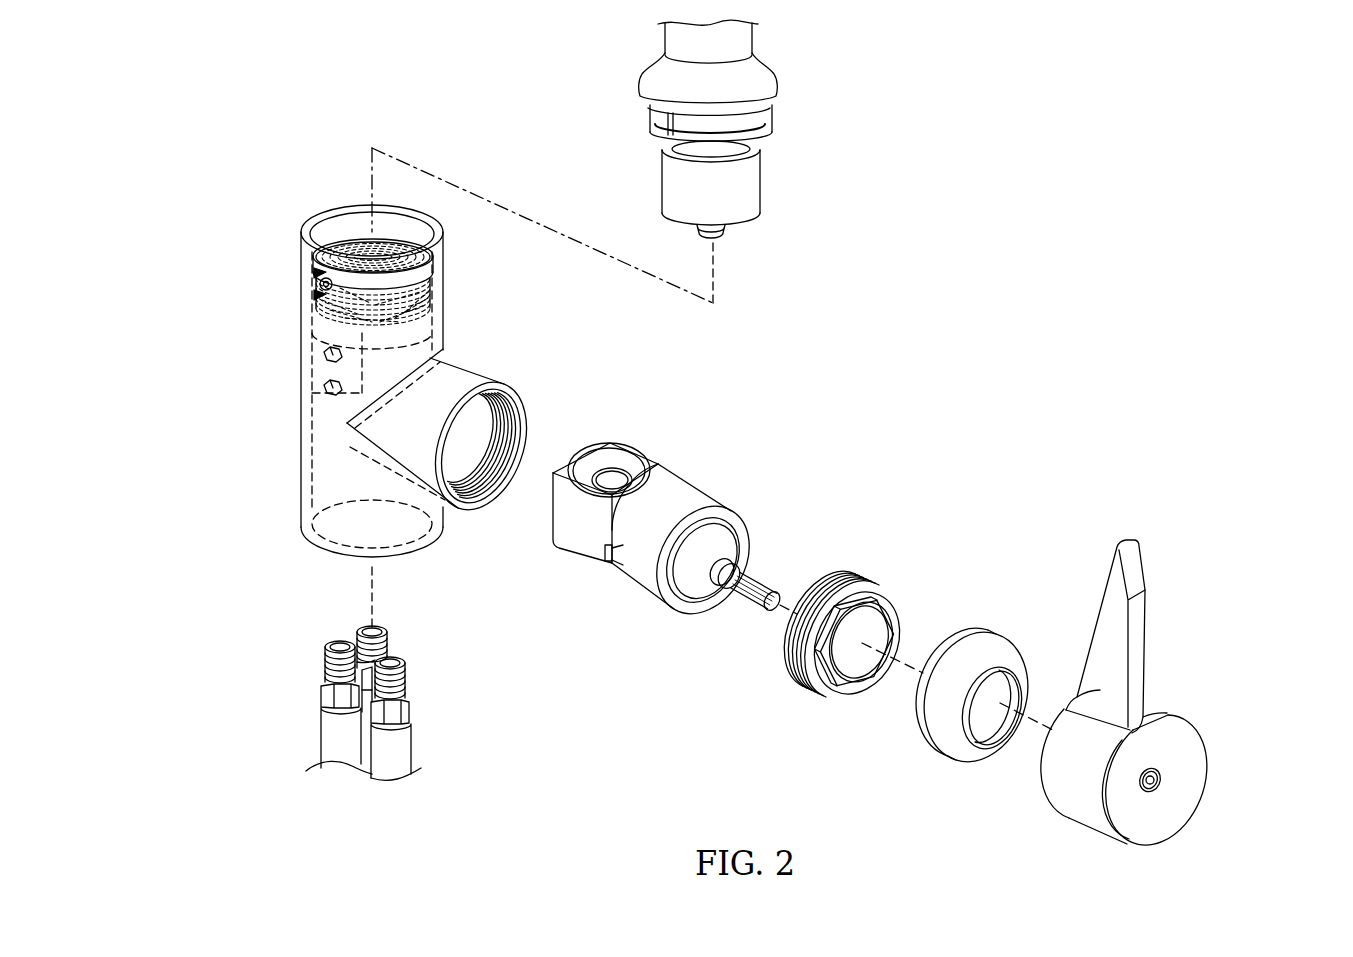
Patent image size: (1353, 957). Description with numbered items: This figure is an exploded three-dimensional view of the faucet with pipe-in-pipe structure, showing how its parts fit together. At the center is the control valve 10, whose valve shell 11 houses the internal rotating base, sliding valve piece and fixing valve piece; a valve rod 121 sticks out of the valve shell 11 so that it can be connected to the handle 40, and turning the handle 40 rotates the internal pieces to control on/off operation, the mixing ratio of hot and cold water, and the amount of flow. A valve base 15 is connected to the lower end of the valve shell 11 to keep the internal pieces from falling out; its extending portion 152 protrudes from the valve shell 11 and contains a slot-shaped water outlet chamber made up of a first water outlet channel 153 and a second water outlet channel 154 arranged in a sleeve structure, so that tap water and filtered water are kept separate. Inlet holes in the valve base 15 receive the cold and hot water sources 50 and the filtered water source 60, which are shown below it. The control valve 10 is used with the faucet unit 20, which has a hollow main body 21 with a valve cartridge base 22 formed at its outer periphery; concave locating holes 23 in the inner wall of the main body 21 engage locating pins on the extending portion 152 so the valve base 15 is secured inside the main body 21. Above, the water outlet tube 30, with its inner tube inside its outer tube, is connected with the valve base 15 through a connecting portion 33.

The control valve 10 is at (637, 538).
The valve shell 11 is at (690, 520).
The valve base 15 is at (551, 498).
The valve rod 121 is at (771, 560).
The extending portion 152 is at (577, 542).
The first water outlet channel 153 is at (600, 439).
The second water outlet channel 154 is at (629, 443).
The faucet unit 20 is at (377, 348).
The main body 21 is at (327, 381).
The valve cartridge base 22 is at (445, 405).
The locating holes 23 is at (316, 392).
The water outlet tube 30 is at (713, 129).
The connecting portion 33 is at (752, 178).
The handle 40 is at (1174, 692).
The cold and hot water sources 50 is at (349, 646).
The filtered water source 60 is at (414, 735).